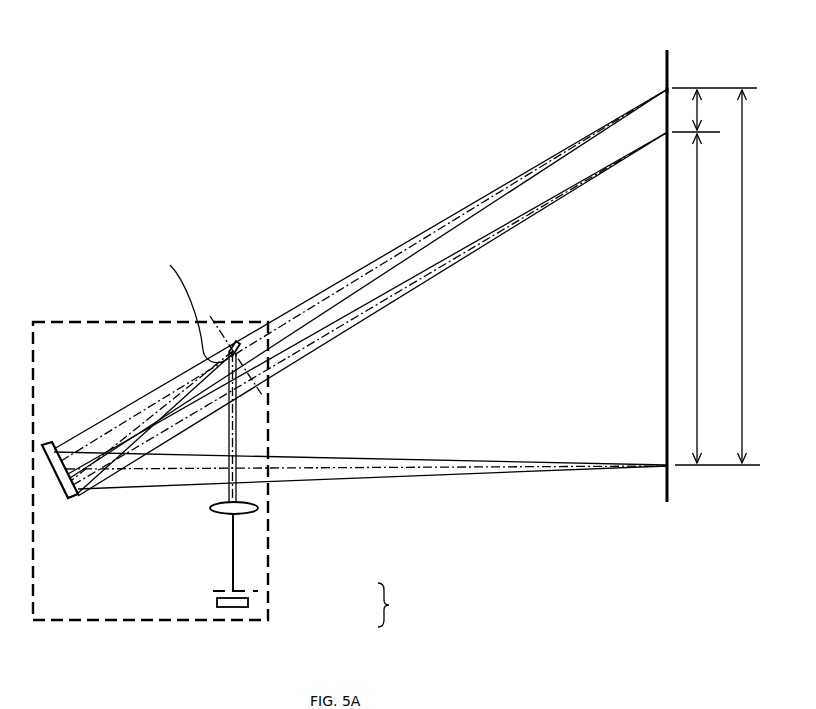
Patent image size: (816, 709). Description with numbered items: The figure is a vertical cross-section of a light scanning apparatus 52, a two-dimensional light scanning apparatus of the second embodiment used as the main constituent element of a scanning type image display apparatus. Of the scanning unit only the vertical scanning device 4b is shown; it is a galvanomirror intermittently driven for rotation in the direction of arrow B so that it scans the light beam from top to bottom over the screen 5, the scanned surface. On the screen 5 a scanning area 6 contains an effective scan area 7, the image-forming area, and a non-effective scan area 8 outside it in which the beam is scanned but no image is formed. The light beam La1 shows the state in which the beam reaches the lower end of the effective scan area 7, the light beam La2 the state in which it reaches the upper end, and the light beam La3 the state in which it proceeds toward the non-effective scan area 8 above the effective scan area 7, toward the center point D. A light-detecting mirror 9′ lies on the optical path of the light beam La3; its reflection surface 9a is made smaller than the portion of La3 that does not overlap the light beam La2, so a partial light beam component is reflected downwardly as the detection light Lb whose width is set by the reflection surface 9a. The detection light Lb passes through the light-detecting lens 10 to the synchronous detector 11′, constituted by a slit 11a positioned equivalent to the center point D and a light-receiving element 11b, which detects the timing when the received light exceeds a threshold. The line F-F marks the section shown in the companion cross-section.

The light scanning apparatus 52 is at (99, 319).
The vertical scanning device 4b is at (50, 438).
The arrow B is at (92, 498).
The light beam La1 is at (126, 481).
The light beam La2 is at (197, 418).
The light beam La3 is at (195, 368).
The reflection surface 9a is at (193, 309).
The small fixed mirror 9′ is at (243, 335).
The line F- F is at (209, 312).
The detection light Lb is at (243, 420).
The light-detecting lens 10 is at (262, 510).
The slit 11a is at (260, 592).
The light-receiving element 11b is at (252, 608).
The synchronous detector 11′ is at (398, 605).
The screen 5 is at (656, 358).
The center point D is at (658, 87).
The non-effective scan area 8 is at (714, 110).
The effective scan area 7 is at (717, 299).
The scanning area 6 is at (750, 276).